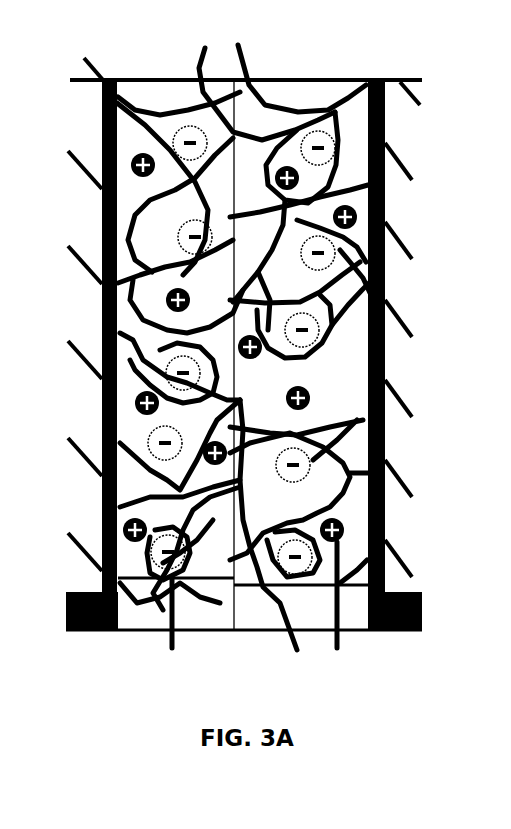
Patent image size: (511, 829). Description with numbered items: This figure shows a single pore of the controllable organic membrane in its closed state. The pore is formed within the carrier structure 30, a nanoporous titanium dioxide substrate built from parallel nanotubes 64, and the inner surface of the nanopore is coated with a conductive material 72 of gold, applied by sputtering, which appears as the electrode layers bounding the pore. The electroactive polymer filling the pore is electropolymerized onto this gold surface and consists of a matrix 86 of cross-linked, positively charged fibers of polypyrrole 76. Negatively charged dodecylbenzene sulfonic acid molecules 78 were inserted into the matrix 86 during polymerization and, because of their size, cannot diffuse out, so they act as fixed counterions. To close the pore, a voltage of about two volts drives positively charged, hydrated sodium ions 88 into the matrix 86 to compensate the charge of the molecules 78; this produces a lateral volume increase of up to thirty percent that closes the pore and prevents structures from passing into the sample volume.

The carrier structure 30 is at (75, 522).
The nanotubes 64 is at (65, 376).
The conductive material 72 is at (367, 92).
The polypyrrole 76 is at (282, 80).
The dodecylbenzene sulfonic acid molecules 78 is at (162, 626).
The matrix 86 is at (383, 469).
The hydrated sodium ions 88 is at (339, 608).